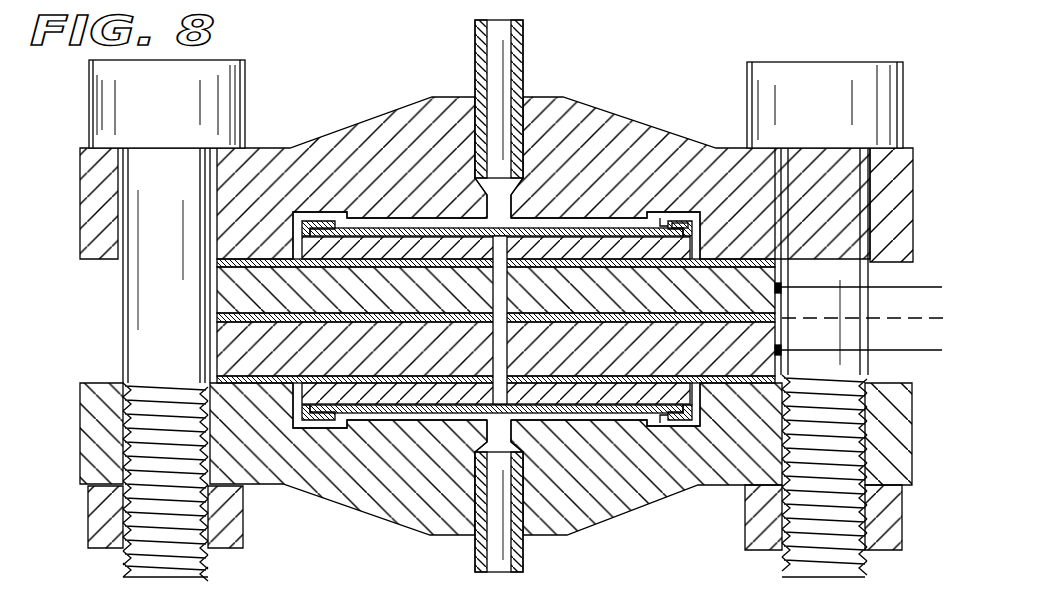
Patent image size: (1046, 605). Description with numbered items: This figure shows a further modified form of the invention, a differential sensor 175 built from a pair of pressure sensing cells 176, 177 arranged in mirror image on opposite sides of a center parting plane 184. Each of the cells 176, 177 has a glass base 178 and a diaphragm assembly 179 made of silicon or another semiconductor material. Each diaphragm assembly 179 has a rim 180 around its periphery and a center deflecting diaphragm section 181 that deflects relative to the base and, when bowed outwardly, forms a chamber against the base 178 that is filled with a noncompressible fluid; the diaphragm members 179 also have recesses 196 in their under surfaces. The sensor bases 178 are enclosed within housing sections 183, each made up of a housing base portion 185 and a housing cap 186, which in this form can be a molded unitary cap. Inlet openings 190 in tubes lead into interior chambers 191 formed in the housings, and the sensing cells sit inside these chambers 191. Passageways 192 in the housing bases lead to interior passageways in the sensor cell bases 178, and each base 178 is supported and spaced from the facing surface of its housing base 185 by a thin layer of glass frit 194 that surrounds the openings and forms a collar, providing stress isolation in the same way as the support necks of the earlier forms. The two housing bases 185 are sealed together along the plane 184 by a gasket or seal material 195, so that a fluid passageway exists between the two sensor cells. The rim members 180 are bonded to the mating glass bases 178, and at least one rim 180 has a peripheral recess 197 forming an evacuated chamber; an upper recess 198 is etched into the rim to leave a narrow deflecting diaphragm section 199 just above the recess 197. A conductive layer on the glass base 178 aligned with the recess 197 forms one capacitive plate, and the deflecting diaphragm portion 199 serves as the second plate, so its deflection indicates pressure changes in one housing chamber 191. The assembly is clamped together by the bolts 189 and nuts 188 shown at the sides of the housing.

The differential sensor 175 is at (358, 514).
The pressure sensing cell 176 is at (411, 424).
The pressure sensing cell 177 is at (365, 200).
The glass base 178 is at (496, 310).
The diaphragm assembly 179 is at (566, 222).
The rim 180 is at (667, 221).
The center deflecting diaphragm section 181 is at (390, 226).
The housing sections 183 is at (496, 318).
The center parting plane 184 is at (823, 318).
The housing base portion 185 is at (245, 283).
The housing cap 186 is at (496, 318).
The nut 188 is at (165, 545).
The bolt 189 is at (192, 332).
The inlet opening 190 is at (524, 44).
The interior chamber 191 is at (604, 217).
The passageway 192 is at (497, 357).
The layer of glass frit 194 is at (528, 258).
The gasket or seal material 195 is at (295, 320).
The recess 196 is at (348, 390).
The recess 197 is at (678, 238).
The upper recess 198 is at (683, 222).
The deflecting diaphragm section 199 is at (316, 220).